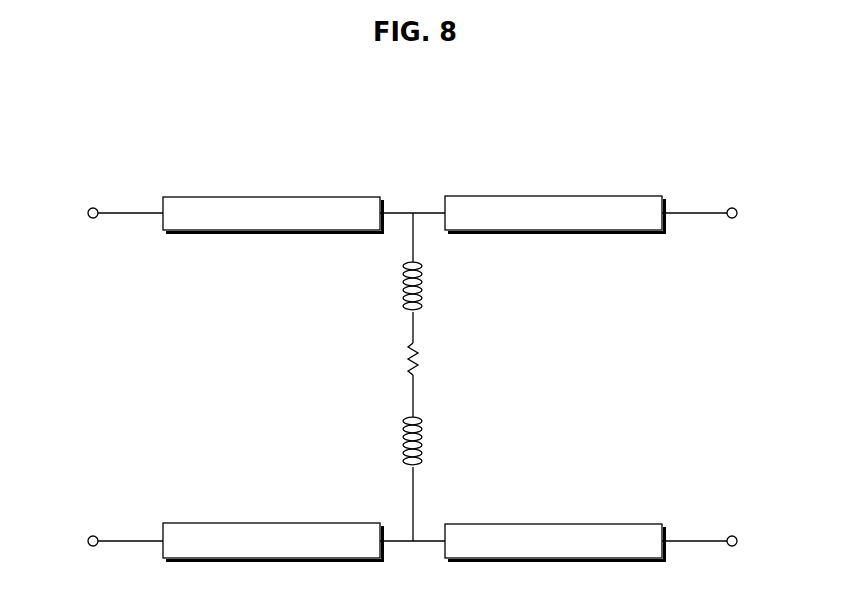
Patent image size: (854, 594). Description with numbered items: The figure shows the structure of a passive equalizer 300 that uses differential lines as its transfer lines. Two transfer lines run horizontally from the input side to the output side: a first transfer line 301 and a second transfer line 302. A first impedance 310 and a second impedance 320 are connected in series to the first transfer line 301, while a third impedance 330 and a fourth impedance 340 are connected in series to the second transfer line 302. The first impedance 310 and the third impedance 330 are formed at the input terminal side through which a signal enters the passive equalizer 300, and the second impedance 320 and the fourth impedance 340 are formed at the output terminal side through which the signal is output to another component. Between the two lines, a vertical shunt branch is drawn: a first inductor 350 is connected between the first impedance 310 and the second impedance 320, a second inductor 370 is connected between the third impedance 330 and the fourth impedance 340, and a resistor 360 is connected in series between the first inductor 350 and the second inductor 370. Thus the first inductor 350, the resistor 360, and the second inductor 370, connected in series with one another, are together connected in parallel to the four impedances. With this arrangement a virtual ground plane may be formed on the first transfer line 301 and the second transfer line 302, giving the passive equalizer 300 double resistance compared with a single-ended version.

The passive equalizer 300 is at (143, 116).
The first transfer line 301 is at (122, 210).
The second transfer line 302 is at (122, 538).
The first impedance 310 is at (354, 196).
The second impedance 320 is at (639, 196).
The third impedance 330 is at (354, 523).
The fourth impedance 340 is at (639, 523).
The first inductor L1 350 is at (402, 290).
The resistor R 360 is at (406, 363).
The second inductor L2 370 is at (404, 445).